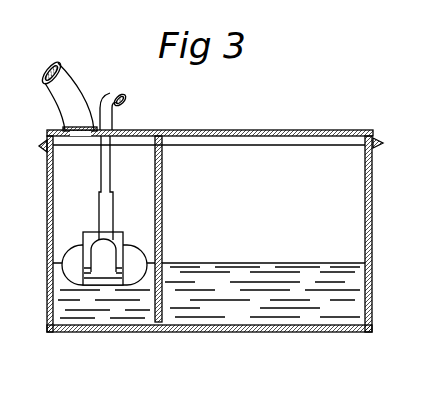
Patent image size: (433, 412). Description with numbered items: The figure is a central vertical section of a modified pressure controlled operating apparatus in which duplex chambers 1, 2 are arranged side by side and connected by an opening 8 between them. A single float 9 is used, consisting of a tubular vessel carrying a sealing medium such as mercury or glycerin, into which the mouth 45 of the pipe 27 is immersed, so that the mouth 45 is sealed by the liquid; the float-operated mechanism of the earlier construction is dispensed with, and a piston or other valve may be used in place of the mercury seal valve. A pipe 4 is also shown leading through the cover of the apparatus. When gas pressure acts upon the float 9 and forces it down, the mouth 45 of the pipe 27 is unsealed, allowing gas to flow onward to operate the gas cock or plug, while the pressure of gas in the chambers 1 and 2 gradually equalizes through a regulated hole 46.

The chamber 1 is at (104, 249).
The chamber 2 is at (263, 248).
The outlet pipe 4 is at (68, 80).
The opening 8 is at (158, 325).
The float 9 is at (135, 268).
The pipe 27 is at (113, 93).
The mouth 45 is at (107, 253).
The regulated hole 46 is at (232, 121).